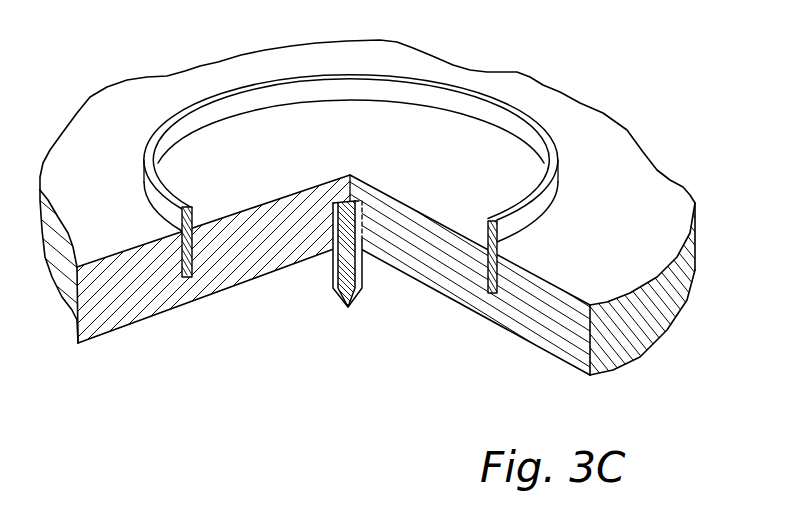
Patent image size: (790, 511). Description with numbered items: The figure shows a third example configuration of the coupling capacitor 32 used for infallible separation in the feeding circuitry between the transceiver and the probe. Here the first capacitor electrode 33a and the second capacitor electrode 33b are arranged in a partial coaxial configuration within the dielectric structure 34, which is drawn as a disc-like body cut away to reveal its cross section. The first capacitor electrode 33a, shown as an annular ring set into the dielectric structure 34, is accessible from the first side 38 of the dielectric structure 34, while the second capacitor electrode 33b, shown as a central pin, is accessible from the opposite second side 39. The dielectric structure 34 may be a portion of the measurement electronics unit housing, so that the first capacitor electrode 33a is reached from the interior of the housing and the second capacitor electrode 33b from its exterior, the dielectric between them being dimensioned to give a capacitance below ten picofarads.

The coupling capacitor 32 is at (395, 231).
The first capacitor electrode 33a is at (172, 203).
The second capacitor electrode 33b is at (361, 290).
The dielectric structure 34 is at (244, 250).
The first side 38 is at (97, 150).
The second side 39 is at (145, 320).